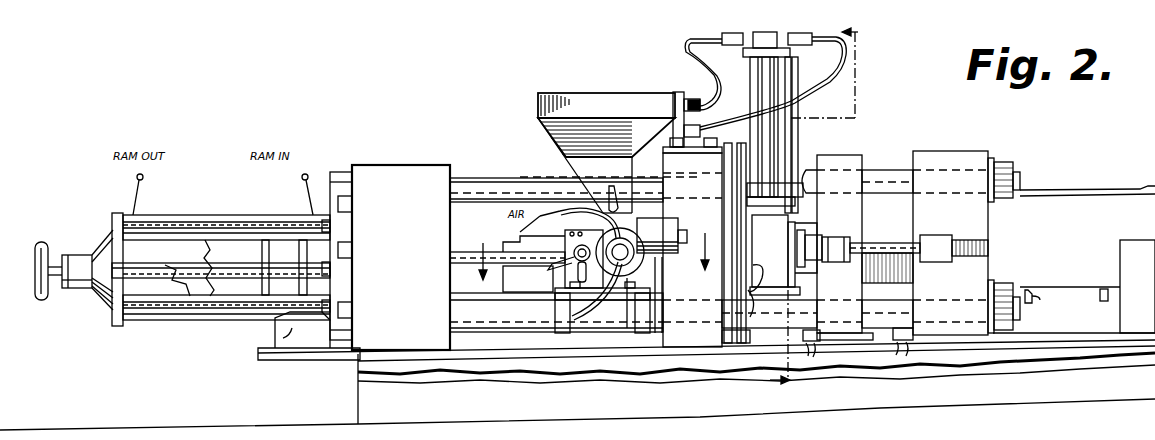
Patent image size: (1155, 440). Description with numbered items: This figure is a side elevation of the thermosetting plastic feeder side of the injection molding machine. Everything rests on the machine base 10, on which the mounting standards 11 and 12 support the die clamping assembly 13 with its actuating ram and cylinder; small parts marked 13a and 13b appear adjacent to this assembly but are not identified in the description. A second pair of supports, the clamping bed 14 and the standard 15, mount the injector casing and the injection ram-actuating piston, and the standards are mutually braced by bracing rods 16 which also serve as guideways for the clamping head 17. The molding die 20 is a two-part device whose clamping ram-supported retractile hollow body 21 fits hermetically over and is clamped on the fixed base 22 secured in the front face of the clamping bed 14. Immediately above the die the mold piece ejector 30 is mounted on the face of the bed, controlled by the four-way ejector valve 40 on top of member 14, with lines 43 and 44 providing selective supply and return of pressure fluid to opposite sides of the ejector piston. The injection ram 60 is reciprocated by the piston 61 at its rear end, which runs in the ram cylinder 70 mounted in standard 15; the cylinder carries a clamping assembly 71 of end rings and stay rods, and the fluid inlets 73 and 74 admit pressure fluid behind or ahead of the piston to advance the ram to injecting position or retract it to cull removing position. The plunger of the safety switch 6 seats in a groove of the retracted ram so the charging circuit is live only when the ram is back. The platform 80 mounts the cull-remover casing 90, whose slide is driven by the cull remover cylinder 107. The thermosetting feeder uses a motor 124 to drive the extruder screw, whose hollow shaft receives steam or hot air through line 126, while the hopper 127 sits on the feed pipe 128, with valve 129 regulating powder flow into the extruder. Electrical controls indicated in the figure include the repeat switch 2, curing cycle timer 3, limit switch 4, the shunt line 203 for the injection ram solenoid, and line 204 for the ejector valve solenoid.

The repeat switch 2 is at (724, 184).
The curing cycle timer 3 is at (814, 210).
The limit switch 4 is at (589, 257).
The safety switch 6 is at (565, 252).
The machine base 10 is at (875, 398).
The mounting standard 11 is at (1146, 281).
The mounting standard 12 is at (963, 278).
The die clamping assembly 13 is at (1058, 235).
The bracket 13a is at (1100, 296).
The bracket 13b is at (1045, 305).
The clamping bed 14 is at (706, 219).
The support standard 15 is at (406, 263).
The bracing rods 16 is at (490, 186).
The clamping head 17 is at (848, 219).
The molding die 20 is at (780, 243).
The retractile hollow body 21 is at (753, 280).
The fixed base 22 is at (748, 305).
The mold piece ejector 30 is at (760, 84).
The ejector control valve 40 is at (689, 92).
The pressure fluid line 43 is at (712, 76).
The pressure fluid line 44 is at (838, 80).
The injection ram 60 is at (466, 254).
The piston 61 is at (285, 247).
The ram cylinder 70 is at (143, 265).
The cylinder clamping assembly 71 is at (232, 228).
The fluid inlet 73 is at (140, 190).
The fluid inlet 74 is at (302, 192).
The platform 80 is at (555, 296).
The cull-remover casing 90 is at (615, 278).
The cull remover cylinder 107 is at (574, 268).
The motor 124 is at (662, 235).
The heating fluid line 126 is at (604, 322).
The hopper 127 is at (612, 97).
The feed pipe 128 is at (566, 160).
The feed valve 129 is at (606, 198).
The shunt line 203 is at (914, 340).
The ejector solenoid line 204 is at (818, 341).